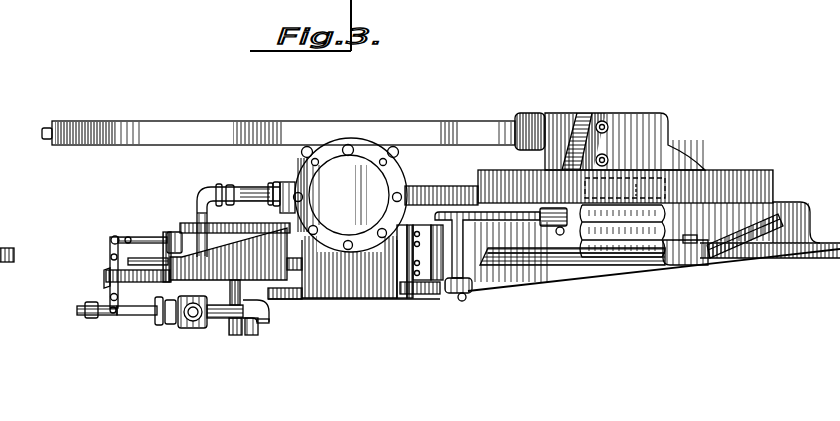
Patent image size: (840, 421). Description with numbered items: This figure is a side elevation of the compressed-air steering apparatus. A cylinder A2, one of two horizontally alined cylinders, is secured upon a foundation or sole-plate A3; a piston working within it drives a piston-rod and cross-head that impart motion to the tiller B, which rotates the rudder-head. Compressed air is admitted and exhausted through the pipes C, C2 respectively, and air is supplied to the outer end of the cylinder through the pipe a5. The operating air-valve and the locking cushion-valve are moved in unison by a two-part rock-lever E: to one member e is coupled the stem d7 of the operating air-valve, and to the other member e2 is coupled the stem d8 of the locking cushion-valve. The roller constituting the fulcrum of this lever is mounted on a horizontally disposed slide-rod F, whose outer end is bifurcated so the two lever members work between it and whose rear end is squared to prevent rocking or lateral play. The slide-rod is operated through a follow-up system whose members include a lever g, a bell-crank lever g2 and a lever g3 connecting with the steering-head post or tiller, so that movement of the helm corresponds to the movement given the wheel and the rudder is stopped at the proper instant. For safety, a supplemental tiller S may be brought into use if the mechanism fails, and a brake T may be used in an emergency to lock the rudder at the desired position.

The supplemental tiller S is at (167, 124).
The lever g3 is at (552, 203).
The tiller B is at (424, 200).
The cylinder A2 is at (296, 180).
The foundation or sole-plate A3 is at (385, 299).
The pipe a5 is at (255, 190).
The stem of the operating air-valve d7 is at (164, 238).
The two-part rock-lever E is at (187, 268).
The member of the rock-lever e is at (108, 246).
The member of the rock-lever e2 is at (108, 299).
The slide-rod F is at (133, 262).
The stem of the locking cushion-valve d8 is at (130, 314).
The supply-pipe C is at (230, 326).
The exhaust pipe C2 is at (260, 330).
The lever g is at (437, 298).
The bell-crank lever g2 is at (468, 212).
The brake T is at (744, 258).